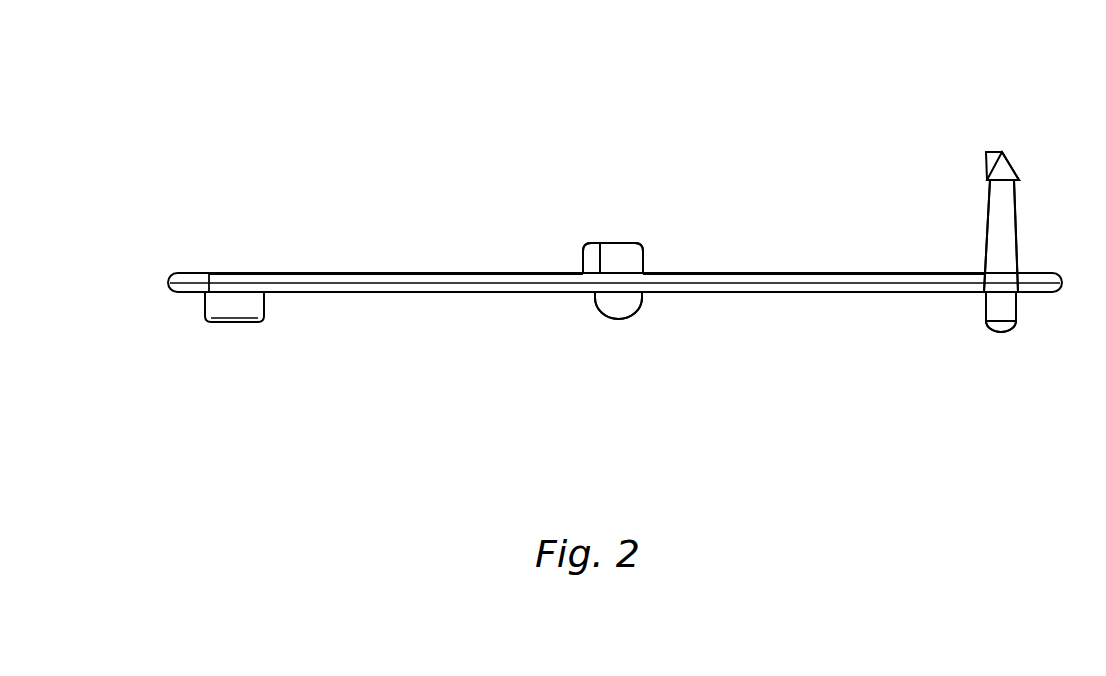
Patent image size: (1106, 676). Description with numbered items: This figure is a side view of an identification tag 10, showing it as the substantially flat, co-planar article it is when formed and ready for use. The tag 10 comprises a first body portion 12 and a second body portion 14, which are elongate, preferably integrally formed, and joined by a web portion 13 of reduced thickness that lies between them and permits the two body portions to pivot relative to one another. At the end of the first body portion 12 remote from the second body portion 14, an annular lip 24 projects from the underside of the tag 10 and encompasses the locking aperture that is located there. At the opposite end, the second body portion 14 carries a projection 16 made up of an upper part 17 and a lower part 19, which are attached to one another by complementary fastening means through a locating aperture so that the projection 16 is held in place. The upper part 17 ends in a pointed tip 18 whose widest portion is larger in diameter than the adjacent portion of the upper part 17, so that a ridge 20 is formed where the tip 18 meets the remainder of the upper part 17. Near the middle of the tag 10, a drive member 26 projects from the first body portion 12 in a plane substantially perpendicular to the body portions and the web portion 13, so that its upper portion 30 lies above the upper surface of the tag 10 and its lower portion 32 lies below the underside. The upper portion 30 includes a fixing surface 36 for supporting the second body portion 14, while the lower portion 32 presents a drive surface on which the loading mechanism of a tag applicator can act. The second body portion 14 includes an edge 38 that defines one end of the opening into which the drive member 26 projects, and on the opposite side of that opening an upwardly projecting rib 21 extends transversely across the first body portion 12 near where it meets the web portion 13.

The identification tag 10 is at (489, 93).
The first body portion 12 is at (360, 278).
The web portion 13 is at (622, 290).
The second body portion 14 is at (838, 276).
The projection 16 is at (975, 250).
The upper part 17 is at (996, 228).
The pointed tip 18 is at (1002, 172).
The lower part 19 is at (1000, 327).
The ridge 20 is at (990, 182).
The rib 21 is at (583, 256).
The annular lip 24 is at (242, 306).
The drive member 26 is at (657, 250).
The upper portion 30 is at (610, 257).
The lower portion 32 is at (605, 300).
The fixing surface 36 is at (625, 247).
The edge 38 is at (645, 290).